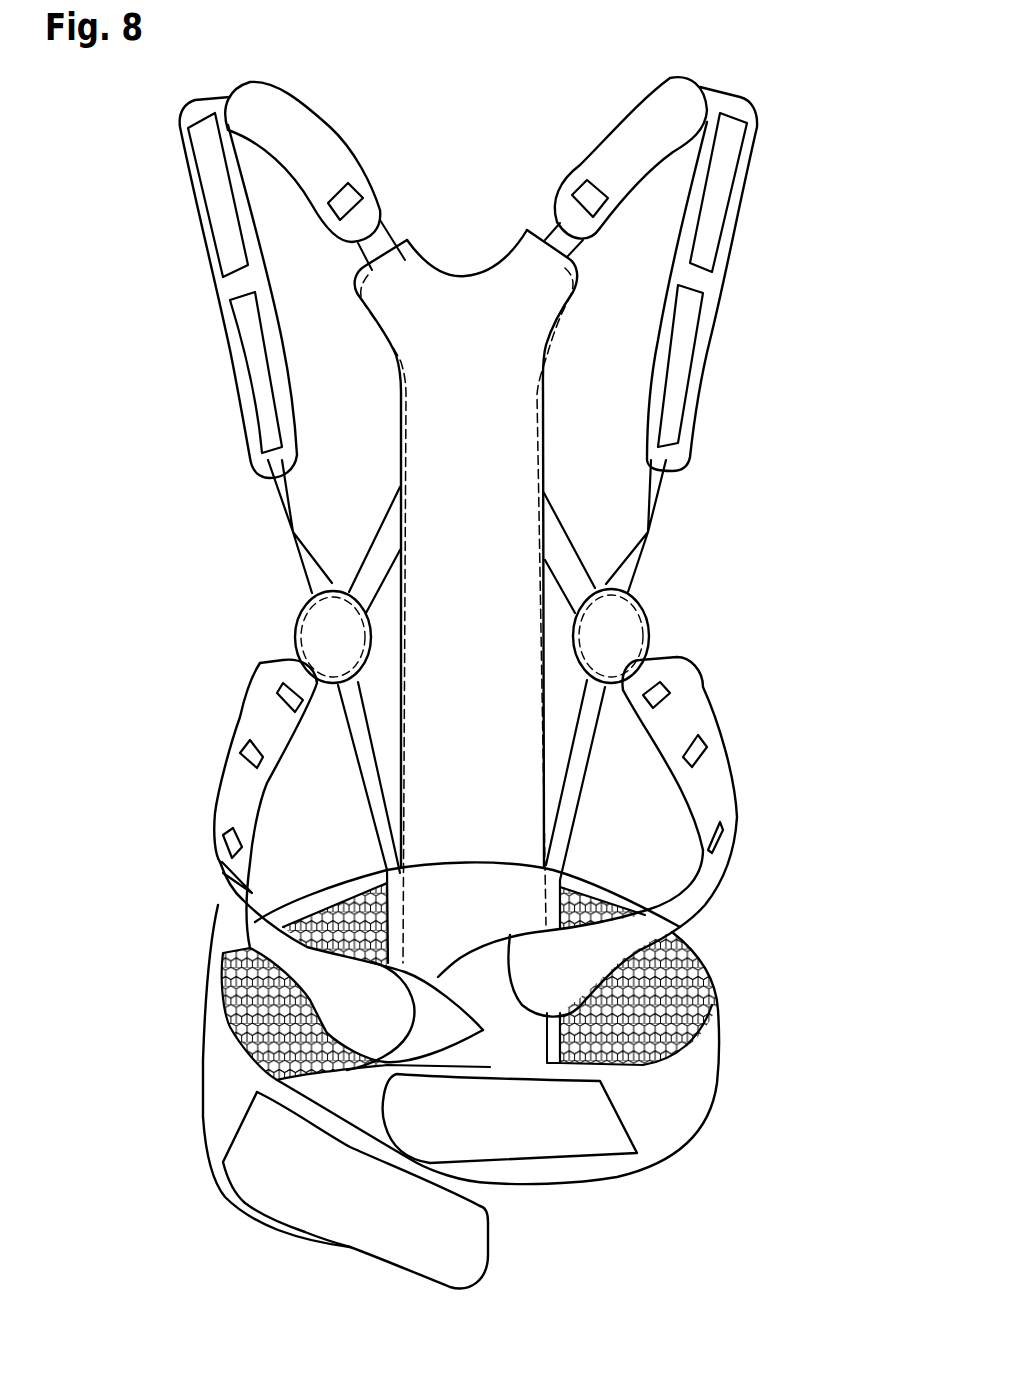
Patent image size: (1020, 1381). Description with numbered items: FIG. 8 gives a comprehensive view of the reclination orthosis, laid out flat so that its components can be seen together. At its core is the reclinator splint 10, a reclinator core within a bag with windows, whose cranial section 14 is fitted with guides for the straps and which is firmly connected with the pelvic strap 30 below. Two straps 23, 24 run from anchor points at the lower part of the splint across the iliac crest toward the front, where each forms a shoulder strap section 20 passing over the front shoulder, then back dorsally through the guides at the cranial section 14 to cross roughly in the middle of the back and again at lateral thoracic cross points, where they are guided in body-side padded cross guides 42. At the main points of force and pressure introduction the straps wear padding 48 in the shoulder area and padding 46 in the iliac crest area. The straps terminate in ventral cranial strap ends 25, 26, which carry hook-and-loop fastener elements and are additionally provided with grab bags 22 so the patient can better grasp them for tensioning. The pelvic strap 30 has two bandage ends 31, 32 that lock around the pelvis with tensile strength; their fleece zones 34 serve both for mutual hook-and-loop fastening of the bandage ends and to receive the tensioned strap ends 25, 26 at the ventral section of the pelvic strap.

The reclinator splint 10 is at (556, 389).
The cranial section 14 is at (468, 297).
The shoulder strap section 20 is at (160, 177).
The grab bags 22 is at (422, 1013).
The strap 23 is at (368, 563).
The strap 24 is at (280, 485).
The ventral cranial strap end 25 is at (337, 970).
The ventral cranial strap end 26 is at (587, 948).
The pelvic strap 30 is at (748, 979).
The bandage end 31 is at (703, 1063).
The bandage end 32 is at (217, 1057).
The fleece zones 34 is at (470, 1235).
The cross guides 42 is at (320, 635).
The padding 46 is at (250, 723).
The padding 48 is at (300, 127).